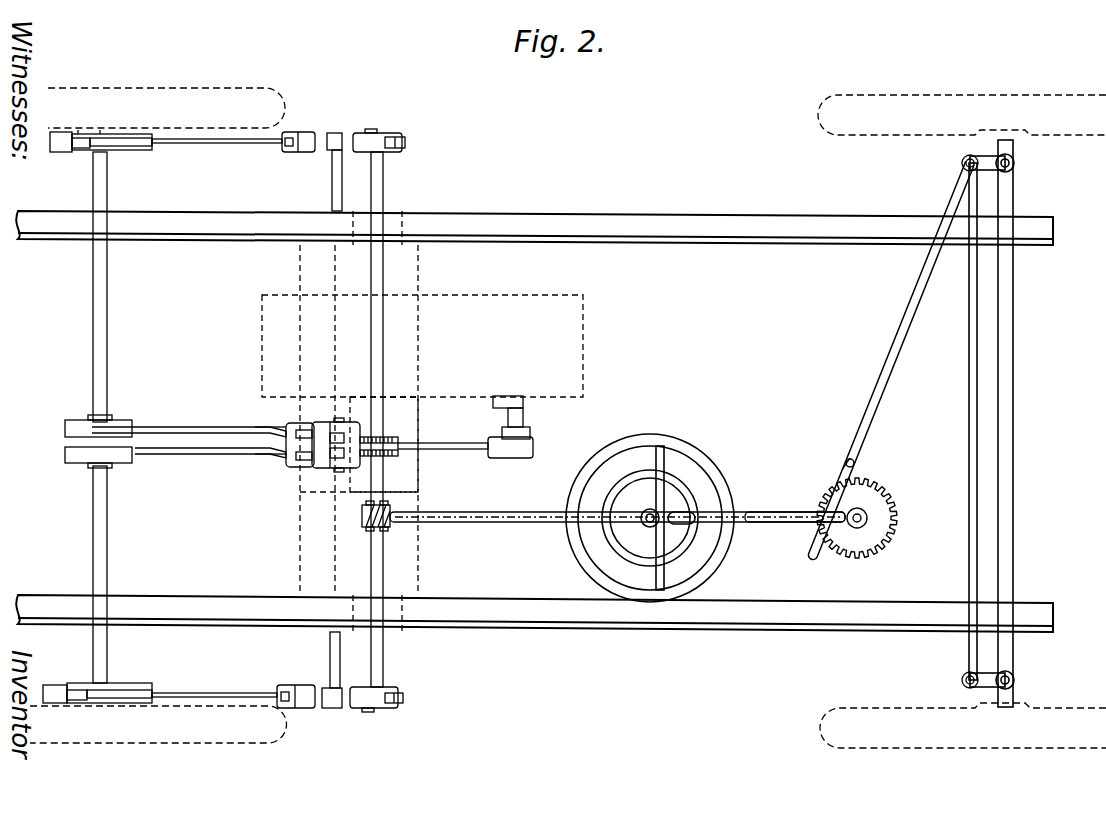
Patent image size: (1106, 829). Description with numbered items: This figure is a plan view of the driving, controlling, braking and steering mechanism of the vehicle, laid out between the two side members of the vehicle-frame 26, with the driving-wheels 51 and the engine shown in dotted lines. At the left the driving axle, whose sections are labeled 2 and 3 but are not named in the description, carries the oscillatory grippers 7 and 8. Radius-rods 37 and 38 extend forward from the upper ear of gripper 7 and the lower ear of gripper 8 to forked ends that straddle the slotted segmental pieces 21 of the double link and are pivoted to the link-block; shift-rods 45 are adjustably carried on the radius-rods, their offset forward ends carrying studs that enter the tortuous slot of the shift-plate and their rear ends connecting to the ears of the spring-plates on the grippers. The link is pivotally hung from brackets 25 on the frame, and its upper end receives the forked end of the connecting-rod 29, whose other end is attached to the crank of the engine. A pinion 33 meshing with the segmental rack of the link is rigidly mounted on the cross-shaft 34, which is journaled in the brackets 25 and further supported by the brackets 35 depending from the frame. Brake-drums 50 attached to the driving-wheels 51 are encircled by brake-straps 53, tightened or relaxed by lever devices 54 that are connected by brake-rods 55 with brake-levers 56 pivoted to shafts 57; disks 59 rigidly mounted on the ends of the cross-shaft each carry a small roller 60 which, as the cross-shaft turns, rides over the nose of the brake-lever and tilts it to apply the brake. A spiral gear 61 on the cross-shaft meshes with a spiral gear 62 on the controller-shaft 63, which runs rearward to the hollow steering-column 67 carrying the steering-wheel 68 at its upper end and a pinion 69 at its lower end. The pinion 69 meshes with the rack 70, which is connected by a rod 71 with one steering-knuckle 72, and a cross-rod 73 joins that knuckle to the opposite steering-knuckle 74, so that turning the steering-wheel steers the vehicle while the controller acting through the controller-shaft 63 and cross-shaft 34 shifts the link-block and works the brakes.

The axle 2 is at (107, 328).
The axle 3 is at (107, 540).
The oscillatory gripper 7 is at (76, 425).
The oscillatory gripper 8 is at (76, 463).
The slotted segmental pieces 21 is at (294, 430).
The brackets 25 is at (418, 470).
The vehicle-frame 26 is at (534, 421).
The connecting-rod 29 is at (440, 443).
The pinion 33 is at (392, 456).
The cross-shaft 34 is at (385, 190).
The brackets 35 is at (408, 226).
The radius-rod 37 is at (197, 427).
The radius-rod 38 is at (197, 454).
The shift-rods 45 is at (260, 433).
The brake-drums 50 is at (145, 152).
The driving-wheels 51 is at (186, 88).
The brake-strap 53 is at (60, 148).
The lever device 54 is at (82, 148).
The brake-rods 55 is at (245, 145).
The brake-levers 56 is at (320, 134).
The shafts 57 is at (332, 178).
The disks 59 is at (368, 133).
The small roller 60 is at (405, 144).
The spiral gear 61 is at (362, 516).
The spiral gear 62 is at (364, 528).
The controller-shaft 63 is at (497, 512).
The hollow steering-column 67 is at (772, 523).
The steering-wheel 68 is at (659, 436).
The pinion 69 is at (882, 502).
The rack 70 is at (845, 480).
The rod 71 is at (880, 400).
The steering-knuckle 72 is at (963, 167).
The cross-rod 73 is at (969, 505).
The steering-knuckle 74 is at (963, 677).